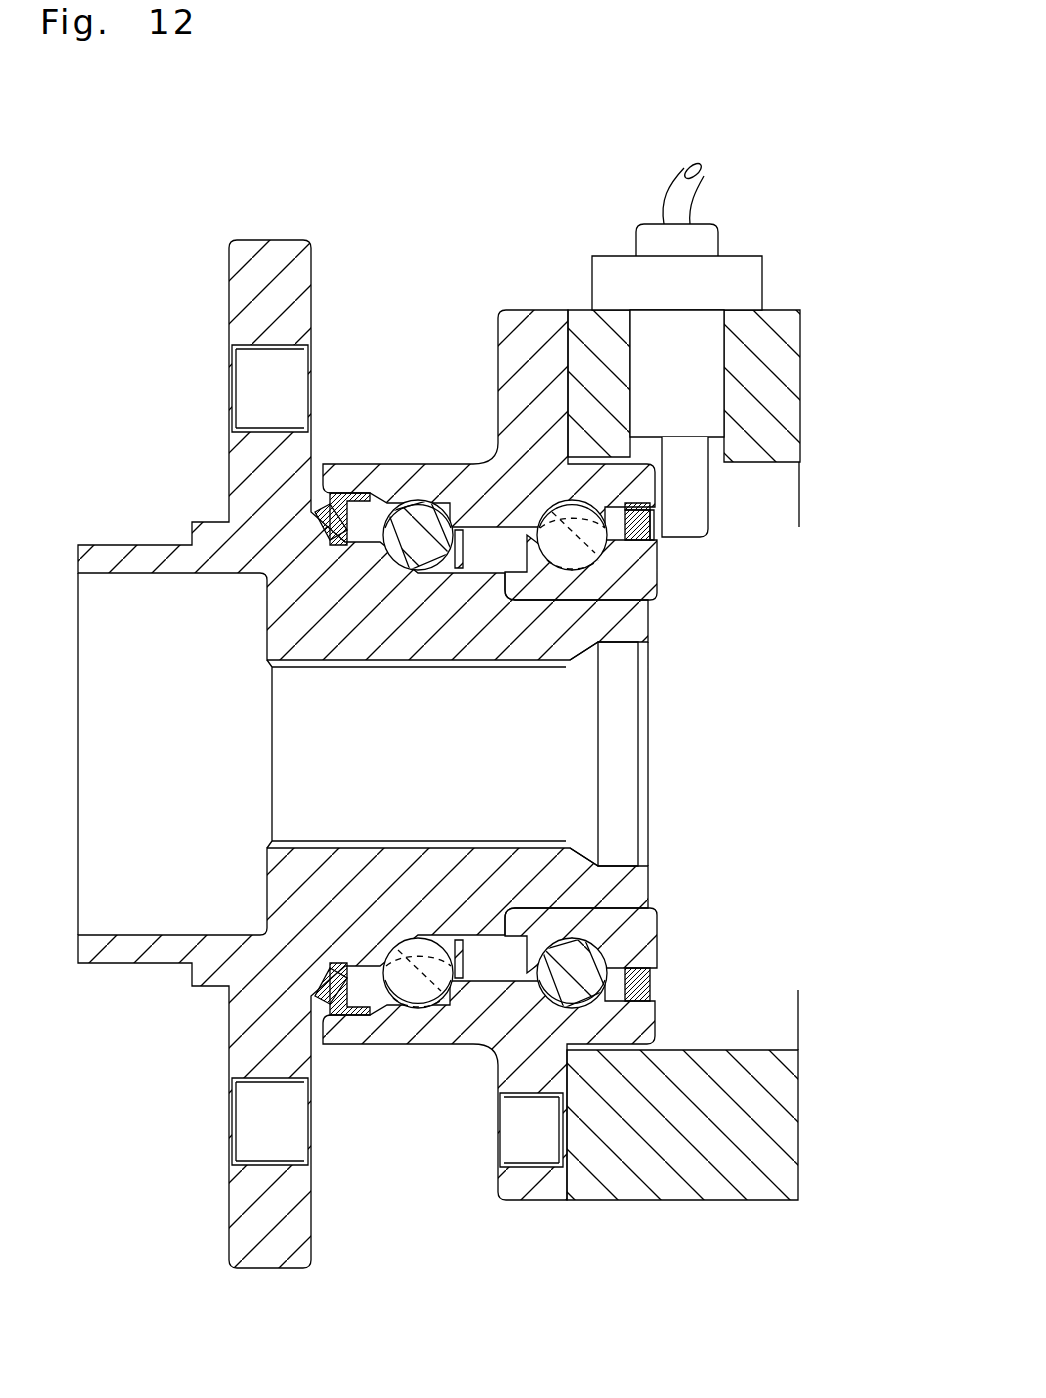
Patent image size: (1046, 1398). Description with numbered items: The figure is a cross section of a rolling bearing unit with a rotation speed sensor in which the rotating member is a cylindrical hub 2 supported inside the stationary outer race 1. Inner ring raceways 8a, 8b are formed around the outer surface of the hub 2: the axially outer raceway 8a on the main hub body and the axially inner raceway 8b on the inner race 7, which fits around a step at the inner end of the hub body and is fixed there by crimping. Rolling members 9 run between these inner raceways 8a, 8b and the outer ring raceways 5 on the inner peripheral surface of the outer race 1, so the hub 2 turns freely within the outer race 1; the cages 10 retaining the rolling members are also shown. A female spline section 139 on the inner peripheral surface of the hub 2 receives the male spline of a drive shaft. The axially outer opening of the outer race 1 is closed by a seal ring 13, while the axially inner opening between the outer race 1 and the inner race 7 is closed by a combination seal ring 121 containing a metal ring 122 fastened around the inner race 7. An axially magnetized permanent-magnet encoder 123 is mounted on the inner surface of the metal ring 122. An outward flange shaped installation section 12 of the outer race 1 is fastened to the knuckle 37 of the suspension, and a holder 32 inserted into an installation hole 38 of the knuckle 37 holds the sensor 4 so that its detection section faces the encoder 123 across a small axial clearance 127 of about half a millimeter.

The outer race 1 is at (465, 477).
The hub 2 is at (481, 945).
The sensor 4 is at (700, 491).
The outer ring raceways 5 is at (545, 512).
The inner race 7 is at (640, 935).
The inner ring raceway 8a is at (407, 940).
The inner ring raceway 8b is at (563, 940).
The rolling members 9 is at (572, 500).
The cage 10 is at (343, 503).
The installation section 12 is at (546, 1192).
The seal ring 13 is at (327, 988).
The holder 32 is at (700, 405).
The knuckle 37 is at (760, 325).
The installation hole 38 is at (738, 312).
The combination seal ring 121 is at (628, 510).
The metal ring 122 is at (650, 526).
The encoder 123 is at (650, 990).
The small clearance 127 is at (655, 545).
The female spline section 139 is at (518, 663).